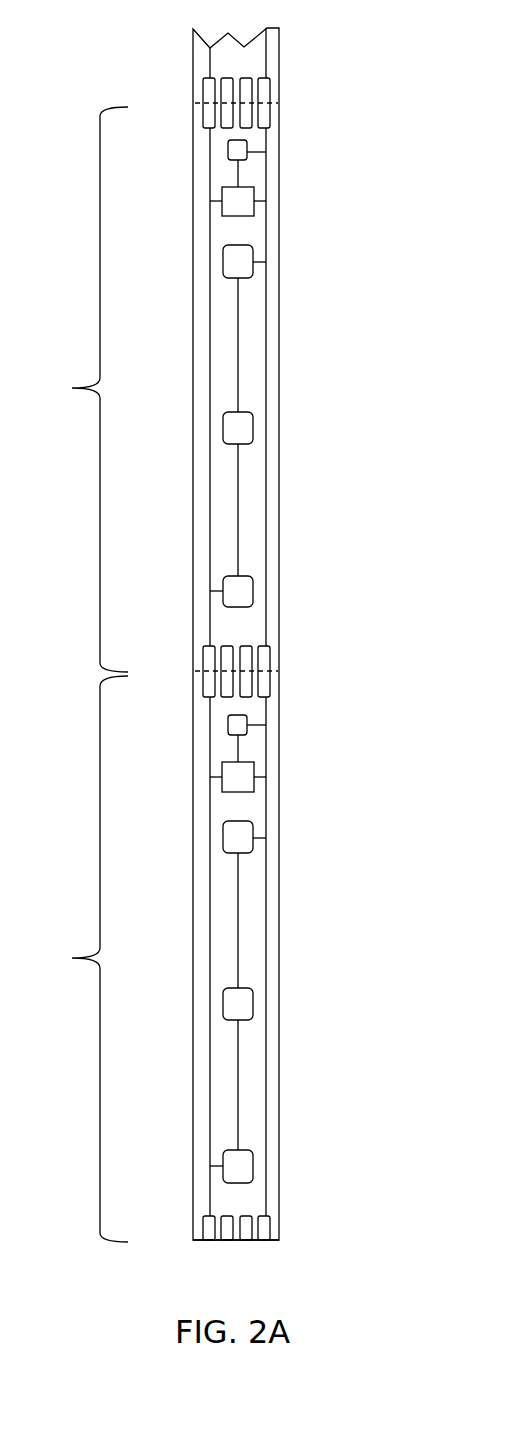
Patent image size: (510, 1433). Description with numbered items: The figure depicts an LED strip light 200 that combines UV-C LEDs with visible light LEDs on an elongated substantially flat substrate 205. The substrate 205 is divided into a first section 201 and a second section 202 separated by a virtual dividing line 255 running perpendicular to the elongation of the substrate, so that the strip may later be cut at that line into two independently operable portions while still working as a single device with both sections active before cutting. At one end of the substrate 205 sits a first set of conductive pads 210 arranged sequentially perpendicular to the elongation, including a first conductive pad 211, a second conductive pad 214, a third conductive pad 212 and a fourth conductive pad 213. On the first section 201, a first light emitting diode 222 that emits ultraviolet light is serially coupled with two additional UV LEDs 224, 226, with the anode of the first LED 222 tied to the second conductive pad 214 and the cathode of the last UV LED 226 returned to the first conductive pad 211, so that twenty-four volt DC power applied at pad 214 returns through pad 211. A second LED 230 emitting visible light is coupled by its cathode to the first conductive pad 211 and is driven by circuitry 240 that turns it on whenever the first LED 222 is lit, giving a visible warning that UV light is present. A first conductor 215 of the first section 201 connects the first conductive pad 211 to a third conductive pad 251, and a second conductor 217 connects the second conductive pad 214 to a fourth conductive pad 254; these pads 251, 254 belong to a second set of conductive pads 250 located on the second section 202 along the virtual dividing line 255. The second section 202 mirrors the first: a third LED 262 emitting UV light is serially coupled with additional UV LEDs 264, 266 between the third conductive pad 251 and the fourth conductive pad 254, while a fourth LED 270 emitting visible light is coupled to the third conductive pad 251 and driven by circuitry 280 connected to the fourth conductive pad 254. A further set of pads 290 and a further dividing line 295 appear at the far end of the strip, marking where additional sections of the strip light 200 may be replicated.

The LED strip light 200 is at (150, 95).
The first section 201 is at (76, 959).
The second section 202 is at (75, 389).
The elongated substantially flat substrate 205 is at (253, 320).
The first set of conductive pads 210 is at (285, 1222).
The first conductive pad 211 is at (268, 1237).
The third conductive pad 212 is at (245, 1236).
The fourth conductive pad 213 is at (228, 1233).
The second conductive pad 214 is at (193, 1240).
The first conductor 215 is at (262, 944).
The second conductor 217 is at (210, 931).
The first light emitting diode 222 is at (243, 1160).
The UV LED 224 is at (240, 1006).
The UV LED 226 is at (240, 832).
The second LED 230 is at (248, 725).
The circuitry 240 is at (238, 781).
The second set of conductive pads 250 is at (285, 651).
The third conductive pad 251 is at (268, 664).
The fourth conductive pad 254 is at (212, 660).
The virtual dividing line 255 is at (196, 672).
The third LED 262 is at (240, 589).
The UV LED 264 is at (240, 430).
The UV LED 266 is at (238, 262).
The fourth LED 270 is at (248, 152).
The circuitry 280 is at (238, 208).
The third connector block 290 is at (285, 91).
The connector boundary 295 is at (195, 104).